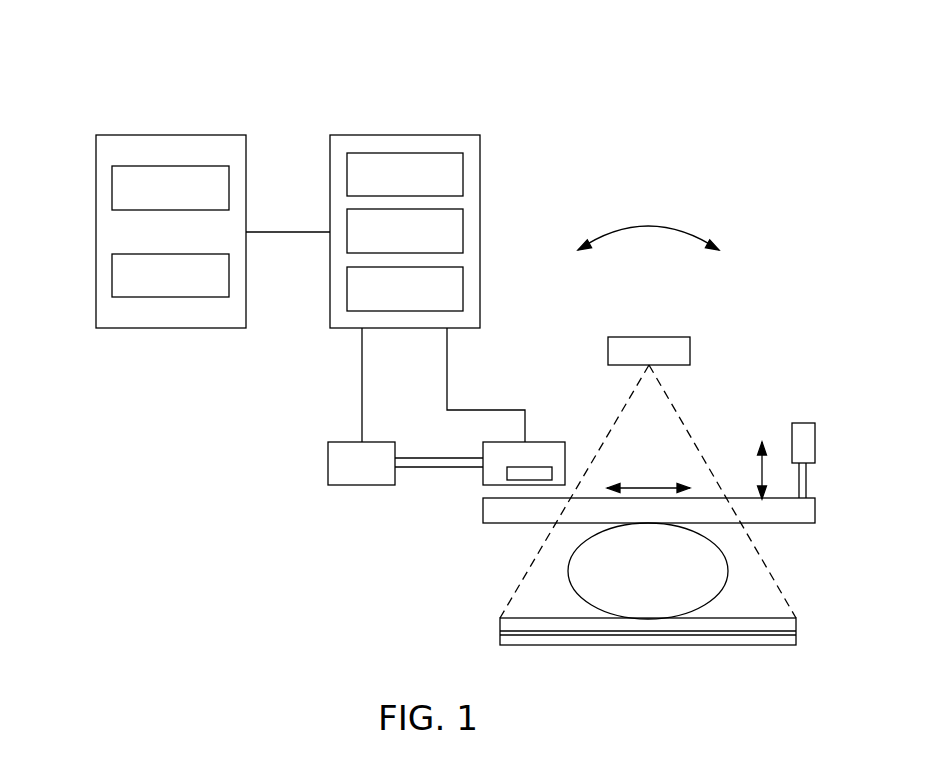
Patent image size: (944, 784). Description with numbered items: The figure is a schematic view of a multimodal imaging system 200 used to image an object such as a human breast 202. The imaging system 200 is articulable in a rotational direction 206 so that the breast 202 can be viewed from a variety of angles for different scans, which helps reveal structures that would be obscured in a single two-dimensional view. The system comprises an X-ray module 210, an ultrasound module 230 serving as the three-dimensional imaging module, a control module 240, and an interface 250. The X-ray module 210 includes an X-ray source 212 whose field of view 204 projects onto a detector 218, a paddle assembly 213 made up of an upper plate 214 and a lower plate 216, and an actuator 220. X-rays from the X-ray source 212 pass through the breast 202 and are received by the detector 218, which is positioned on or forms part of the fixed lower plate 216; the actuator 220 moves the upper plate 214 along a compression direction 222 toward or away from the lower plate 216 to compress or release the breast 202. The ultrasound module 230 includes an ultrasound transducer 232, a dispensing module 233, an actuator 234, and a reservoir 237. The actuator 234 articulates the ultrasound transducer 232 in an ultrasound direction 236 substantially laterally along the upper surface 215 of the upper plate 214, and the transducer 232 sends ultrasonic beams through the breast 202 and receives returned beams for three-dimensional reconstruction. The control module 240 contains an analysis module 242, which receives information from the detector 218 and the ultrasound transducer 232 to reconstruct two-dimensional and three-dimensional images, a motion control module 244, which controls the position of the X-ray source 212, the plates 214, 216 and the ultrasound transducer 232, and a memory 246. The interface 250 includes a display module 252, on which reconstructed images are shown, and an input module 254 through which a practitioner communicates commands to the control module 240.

The imaging system 200 is at (723, 94).
The breast 202 is at (728, 572).
The field of view 204 is at (674, 400).
The rotational direction 206 is at (647, 228).
The X-ray module 210 is at (745, 305).
The X-ray source 212 is at (690, 350).
The paddle assembly 213 is at (826, 492).
The upper plate 214 is at (815, 512).
The upper surface 215 is at (708, 498).
The lower plate 216 is at (796, 640).
The detector 218 is at (762, 618).
The actuator 220 is at (815, 441).
The compression direction 222 is at (766, 448).
The ultrasound module 230 is at (537, 410).
The ultrasound transducer 232 is at (552, 442).
The dispensing module 233 is at (445, 497).
The actuator 234 is at (328, 461).
The ultrasound direction 236 is at (645, 486).
The reservoir 237 is at (507, 474).
The control module 240 is at (403, 135).
The analysis module 242 is at (463, 172).
The motion control module 244 is at (463, 230).
The memory 246 is at (463, 288).
The interface 250 is at (168, 135).
The display module 252 is at (112, 186).
The input module 254 is at (112, 273).